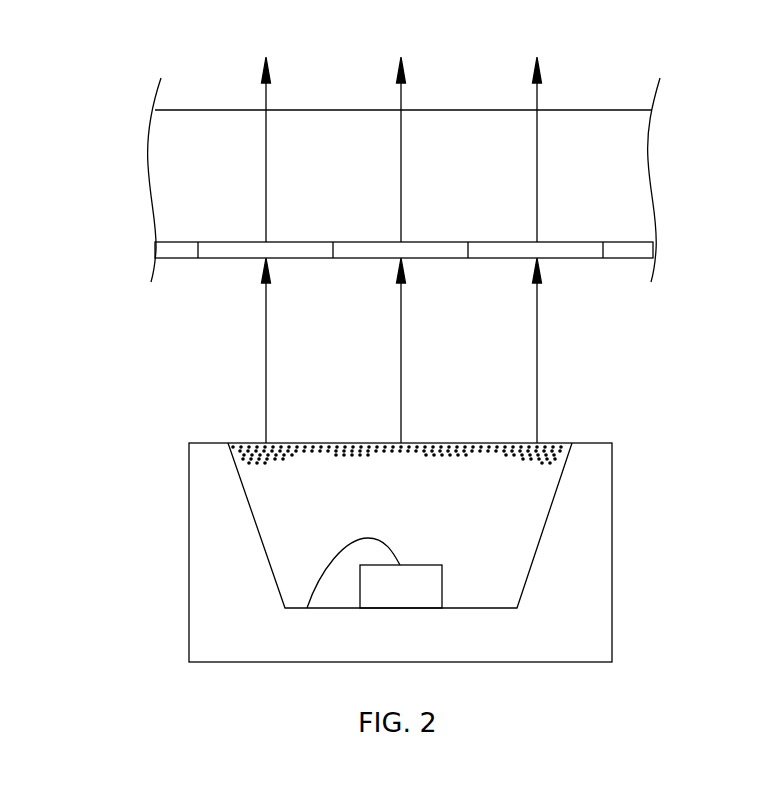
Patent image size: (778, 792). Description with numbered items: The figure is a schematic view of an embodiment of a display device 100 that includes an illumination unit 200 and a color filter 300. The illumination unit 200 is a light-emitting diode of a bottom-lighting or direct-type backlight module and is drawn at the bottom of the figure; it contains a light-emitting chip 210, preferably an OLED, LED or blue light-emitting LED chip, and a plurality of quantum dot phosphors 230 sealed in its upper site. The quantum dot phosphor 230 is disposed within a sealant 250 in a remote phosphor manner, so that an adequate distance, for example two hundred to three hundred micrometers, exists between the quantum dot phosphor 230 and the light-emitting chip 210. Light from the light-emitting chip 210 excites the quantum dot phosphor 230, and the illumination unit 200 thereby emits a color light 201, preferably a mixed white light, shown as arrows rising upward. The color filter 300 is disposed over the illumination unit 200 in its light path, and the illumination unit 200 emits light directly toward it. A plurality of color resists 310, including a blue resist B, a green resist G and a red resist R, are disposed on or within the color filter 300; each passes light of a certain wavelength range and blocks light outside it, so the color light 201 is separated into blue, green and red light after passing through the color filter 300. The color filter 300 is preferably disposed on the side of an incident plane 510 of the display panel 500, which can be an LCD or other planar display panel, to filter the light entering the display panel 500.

The display device 100 is at (146, 40).
The illumination unit 200 is at (375, 537).
The color light 201 is at (266, 362).
The light-emitting chip 210 is at (408, 595).
The quantum dot phosphor 230 is at (552, 450).
The sealant 250 is at (522, 512).
The color filter 300 is at (364, 290).
The color resists 310 is at (226, 252).
The display panel 500 is at (393, 180).
The incident plane 510 is at (212, 242).